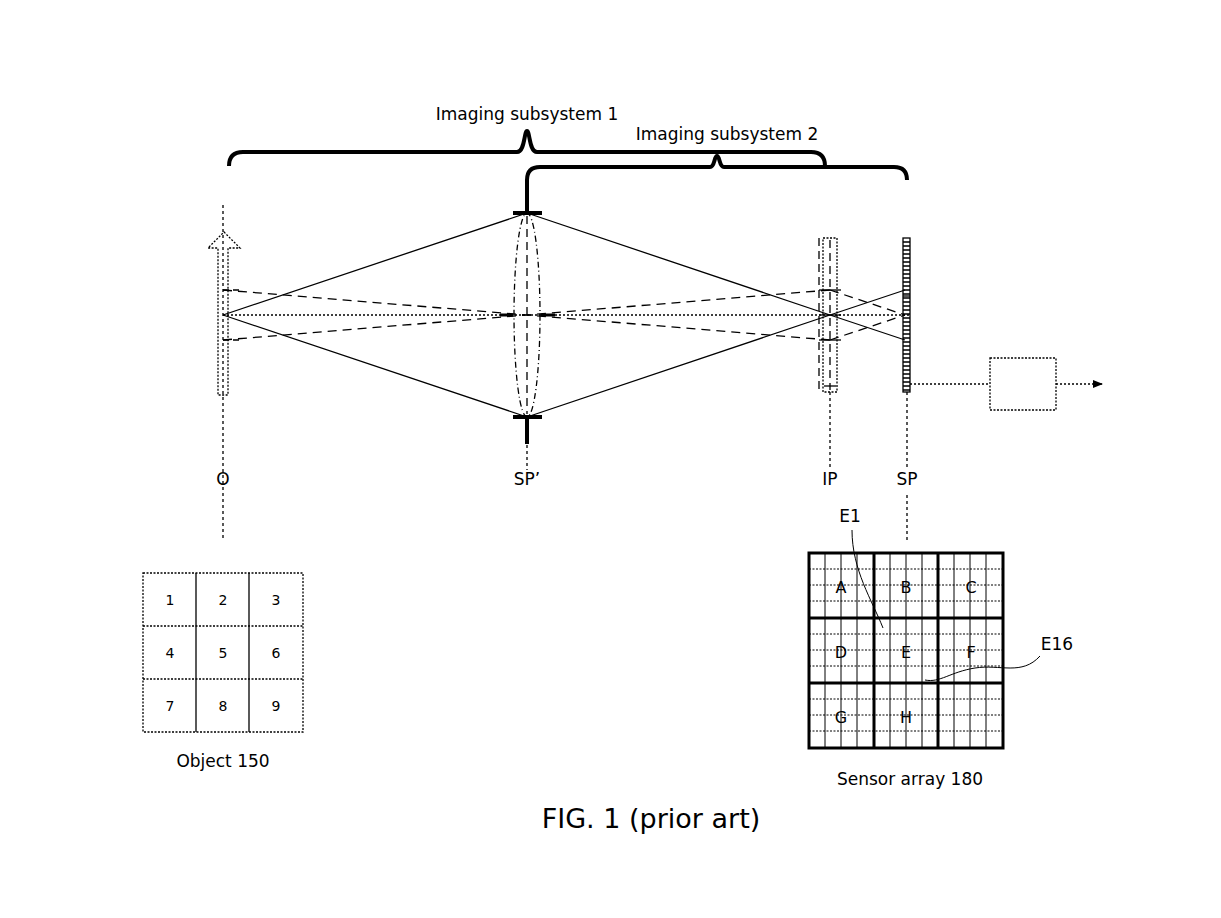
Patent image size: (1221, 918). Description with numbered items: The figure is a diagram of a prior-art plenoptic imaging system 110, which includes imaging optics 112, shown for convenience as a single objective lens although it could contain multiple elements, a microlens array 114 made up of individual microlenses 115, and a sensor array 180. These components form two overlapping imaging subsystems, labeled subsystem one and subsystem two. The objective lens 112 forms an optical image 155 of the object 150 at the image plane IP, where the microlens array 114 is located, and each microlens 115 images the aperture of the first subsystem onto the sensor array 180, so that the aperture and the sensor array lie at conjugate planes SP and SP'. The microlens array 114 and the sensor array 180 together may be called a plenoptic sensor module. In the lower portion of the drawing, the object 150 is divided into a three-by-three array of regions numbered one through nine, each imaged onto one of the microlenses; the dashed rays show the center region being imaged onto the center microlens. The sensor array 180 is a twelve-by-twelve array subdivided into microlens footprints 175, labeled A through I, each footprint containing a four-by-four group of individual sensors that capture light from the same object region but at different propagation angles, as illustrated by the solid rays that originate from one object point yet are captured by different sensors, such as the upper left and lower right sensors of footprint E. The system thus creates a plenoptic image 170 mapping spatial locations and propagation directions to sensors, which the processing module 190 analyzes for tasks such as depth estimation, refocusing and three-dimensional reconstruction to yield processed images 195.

The plenoptic imaging system 110 is at (954, 214).
The imaging optics 112 is at (518, 242).
The microlens array 114 is at (815, 235).
The microlenses 115 is at (818, 272).
The object 150 is at (228, 265).
The optical image 155 is at (818, 368).
The plenoptic image 170 is at (905, 295).
The microlens footprints 175 is at (805, 588).
The sensor array 180 is at (913, 265).
The processing module 190 is at (983, 384).
The processed images 195 is at (1133, 386).